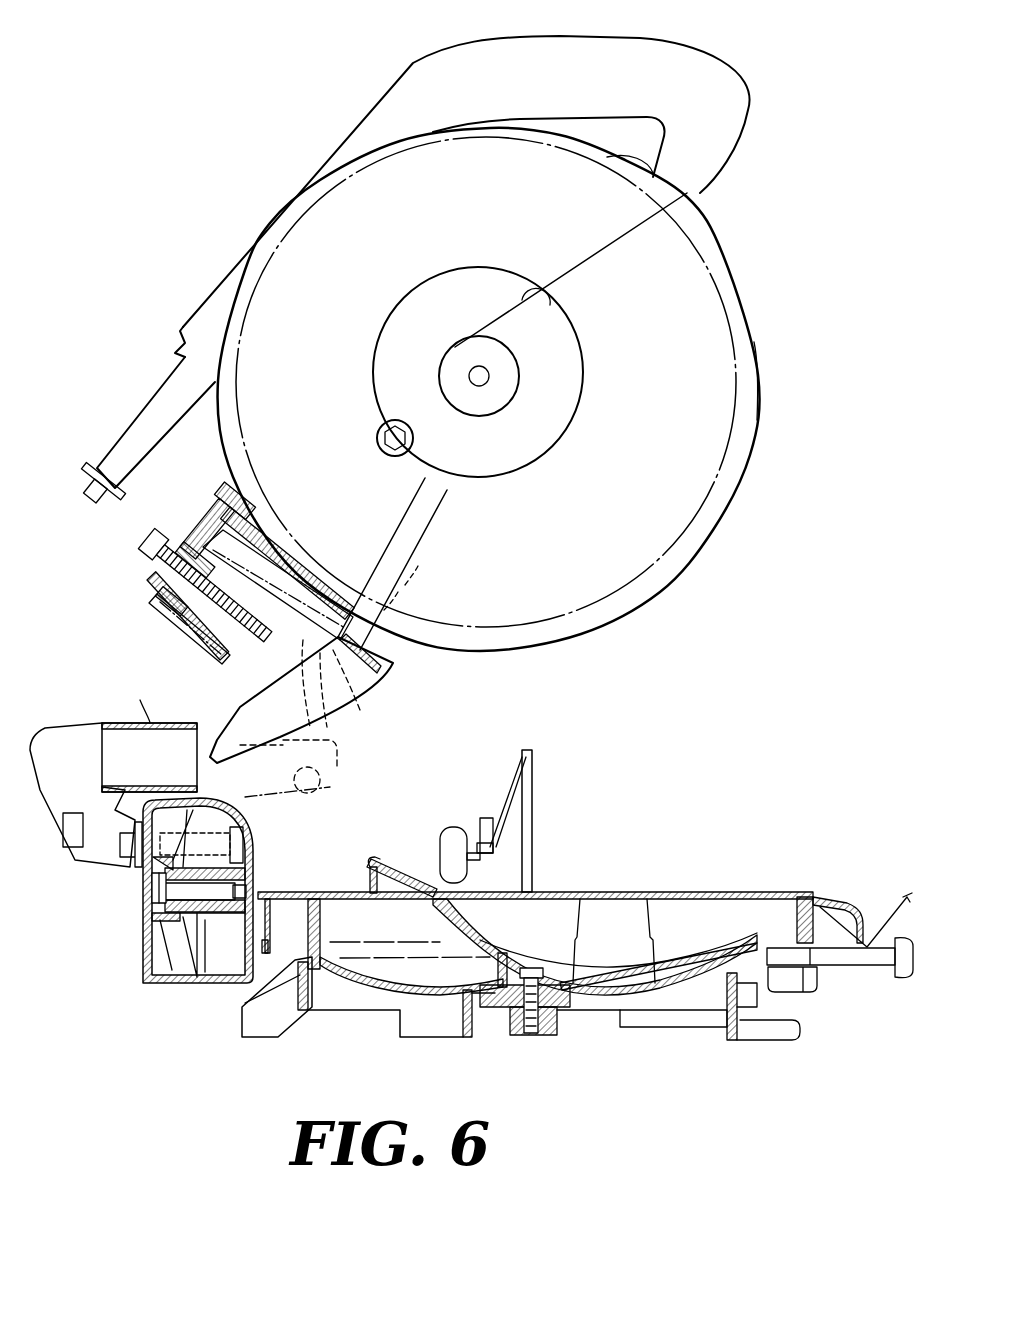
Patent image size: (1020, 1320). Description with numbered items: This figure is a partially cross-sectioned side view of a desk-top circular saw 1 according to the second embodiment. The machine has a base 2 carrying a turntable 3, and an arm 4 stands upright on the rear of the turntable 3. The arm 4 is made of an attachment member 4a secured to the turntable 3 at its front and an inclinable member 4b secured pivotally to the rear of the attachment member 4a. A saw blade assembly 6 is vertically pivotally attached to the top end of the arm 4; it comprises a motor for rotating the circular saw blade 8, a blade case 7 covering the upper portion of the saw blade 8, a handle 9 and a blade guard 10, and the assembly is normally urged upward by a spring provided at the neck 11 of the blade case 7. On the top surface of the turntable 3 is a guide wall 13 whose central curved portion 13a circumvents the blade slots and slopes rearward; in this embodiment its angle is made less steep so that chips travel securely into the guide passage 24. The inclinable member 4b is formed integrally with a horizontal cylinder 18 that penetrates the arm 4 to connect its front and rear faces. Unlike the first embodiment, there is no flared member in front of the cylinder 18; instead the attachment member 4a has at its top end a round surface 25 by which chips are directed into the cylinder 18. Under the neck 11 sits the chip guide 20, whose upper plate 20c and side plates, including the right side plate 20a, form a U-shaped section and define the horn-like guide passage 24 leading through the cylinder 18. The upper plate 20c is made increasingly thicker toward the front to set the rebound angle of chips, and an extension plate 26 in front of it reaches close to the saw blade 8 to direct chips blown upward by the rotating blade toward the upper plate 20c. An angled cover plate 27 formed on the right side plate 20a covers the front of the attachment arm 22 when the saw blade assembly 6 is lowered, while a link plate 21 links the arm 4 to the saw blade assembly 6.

The desk-top circular saw 1 is at (748, 193).
The base 2 is at (357, 997).
The turntable 3 is at (703, 895).
The arm 4 is at (142, 948).
The attachment member 4a is at (227, 965).
The inclinable member 4b is at (170, 963).
The saw blade assembly 6 is at (750, 291).
The blade case 7 is at (280, 222).
The circular saw blade 8 is at (690, 493).
The handle 9 is at (690, 62).
The blade guard 10 is at (760, 396).
The neck 11 is at (207, 565).
The guide wall 13 is at (535, 771).
The curved portion 13a is at (392, 878).
The horizontal cylinder 18 is at (125, 703).
The chip guide 20 is at (378, 688).
The right side plate 20a is at (335, 722).
The upper plate 20c is at (362, 706).
The link plate 21 is at (365, 535).
The attachment arm 22 is at (330, 776).
The guide passage 24 is at (125, 745).
The round surface 25 is at (252, 799).
The extension plate 26 is at (403, 580).
The angled cover plate 27 is at (392, 662).